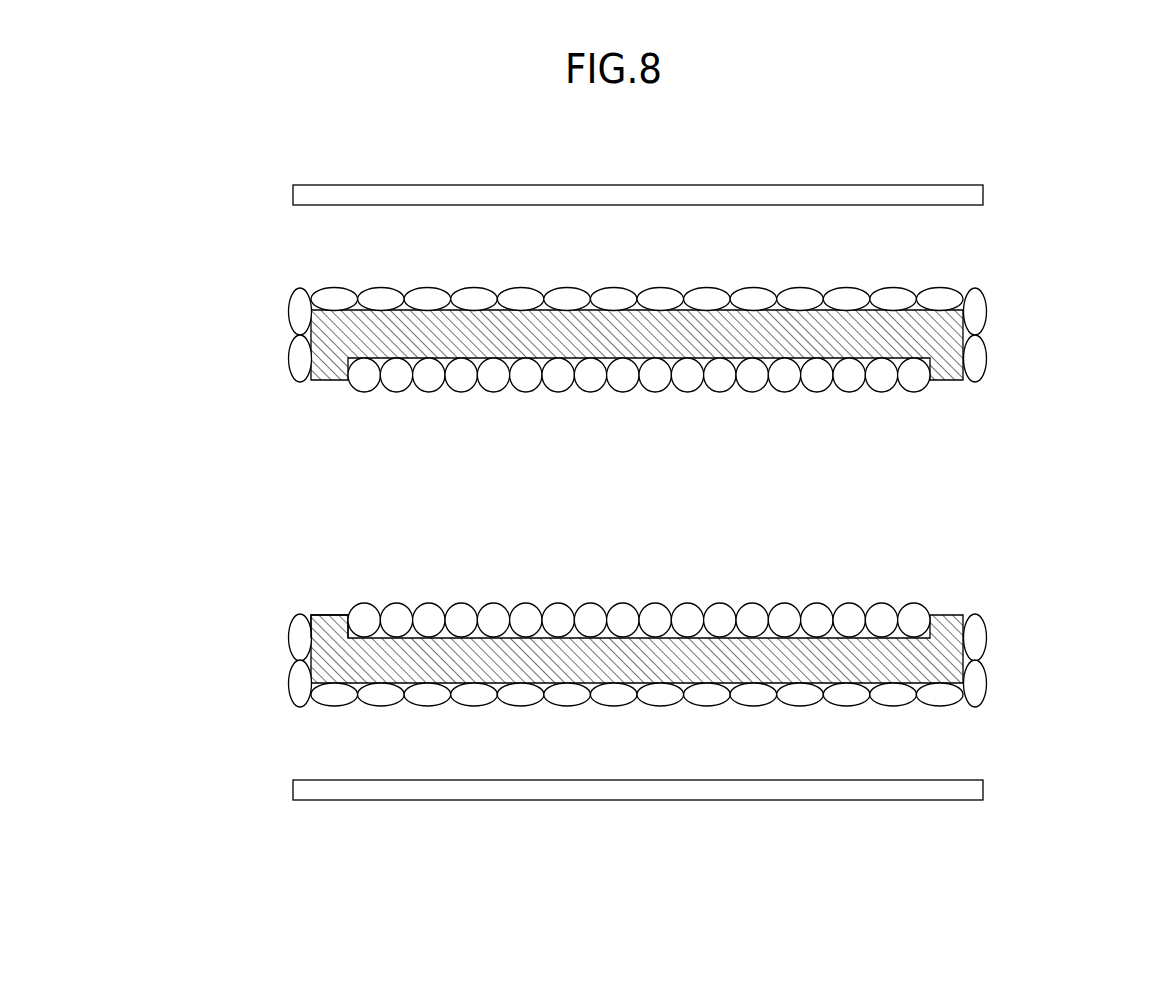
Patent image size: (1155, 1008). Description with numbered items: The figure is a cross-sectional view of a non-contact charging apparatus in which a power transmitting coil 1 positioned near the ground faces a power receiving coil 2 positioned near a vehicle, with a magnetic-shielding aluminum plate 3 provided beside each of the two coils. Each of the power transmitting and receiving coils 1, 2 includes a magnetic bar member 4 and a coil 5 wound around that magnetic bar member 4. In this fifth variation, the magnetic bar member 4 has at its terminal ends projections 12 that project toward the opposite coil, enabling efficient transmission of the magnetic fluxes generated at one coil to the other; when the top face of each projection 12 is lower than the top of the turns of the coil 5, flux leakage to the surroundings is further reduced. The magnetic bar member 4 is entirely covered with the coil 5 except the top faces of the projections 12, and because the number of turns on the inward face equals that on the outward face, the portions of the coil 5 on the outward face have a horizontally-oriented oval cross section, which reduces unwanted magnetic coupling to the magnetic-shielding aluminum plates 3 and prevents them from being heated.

The power transmitting coil 1 is at (276, 655).
The power receiving coil 2 is at (276, 330).
The magnetic-shielding aluminum plate 3 is at (962, 200).
The magnetic bar member 4 is at (1048, 497).
The coil 5 is at (639, 497).
The projection 12 is at (331, 615).